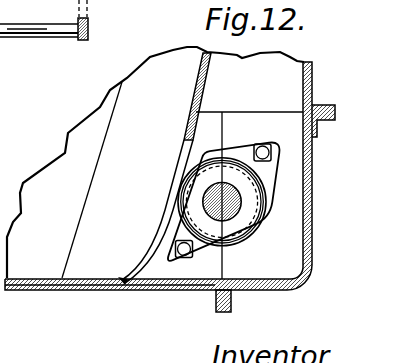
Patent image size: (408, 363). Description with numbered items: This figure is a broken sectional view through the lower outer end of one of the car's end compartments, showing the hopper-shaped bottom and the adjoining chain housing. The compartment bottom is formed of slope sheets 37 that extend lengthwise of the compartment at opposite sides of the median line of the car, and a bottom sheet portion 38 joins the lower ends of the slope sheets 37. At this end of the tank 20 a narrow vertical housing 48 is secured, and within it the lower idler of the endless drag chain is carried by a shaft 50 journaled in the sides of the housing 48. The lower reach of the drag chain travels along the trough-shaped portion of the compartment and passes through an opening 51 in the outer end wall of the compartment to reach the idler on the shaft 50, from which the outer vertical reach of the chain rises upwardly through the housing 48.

The tank 20 is at (183, 88).
The slope sheet 37 is at (82, 162).
The bottom sheet portion 38 is at (32, 278).
The vertical housing 48 is at (312, 79).
The shaft 50 is at (241, 202).
The opening 51 is at (157, 235).